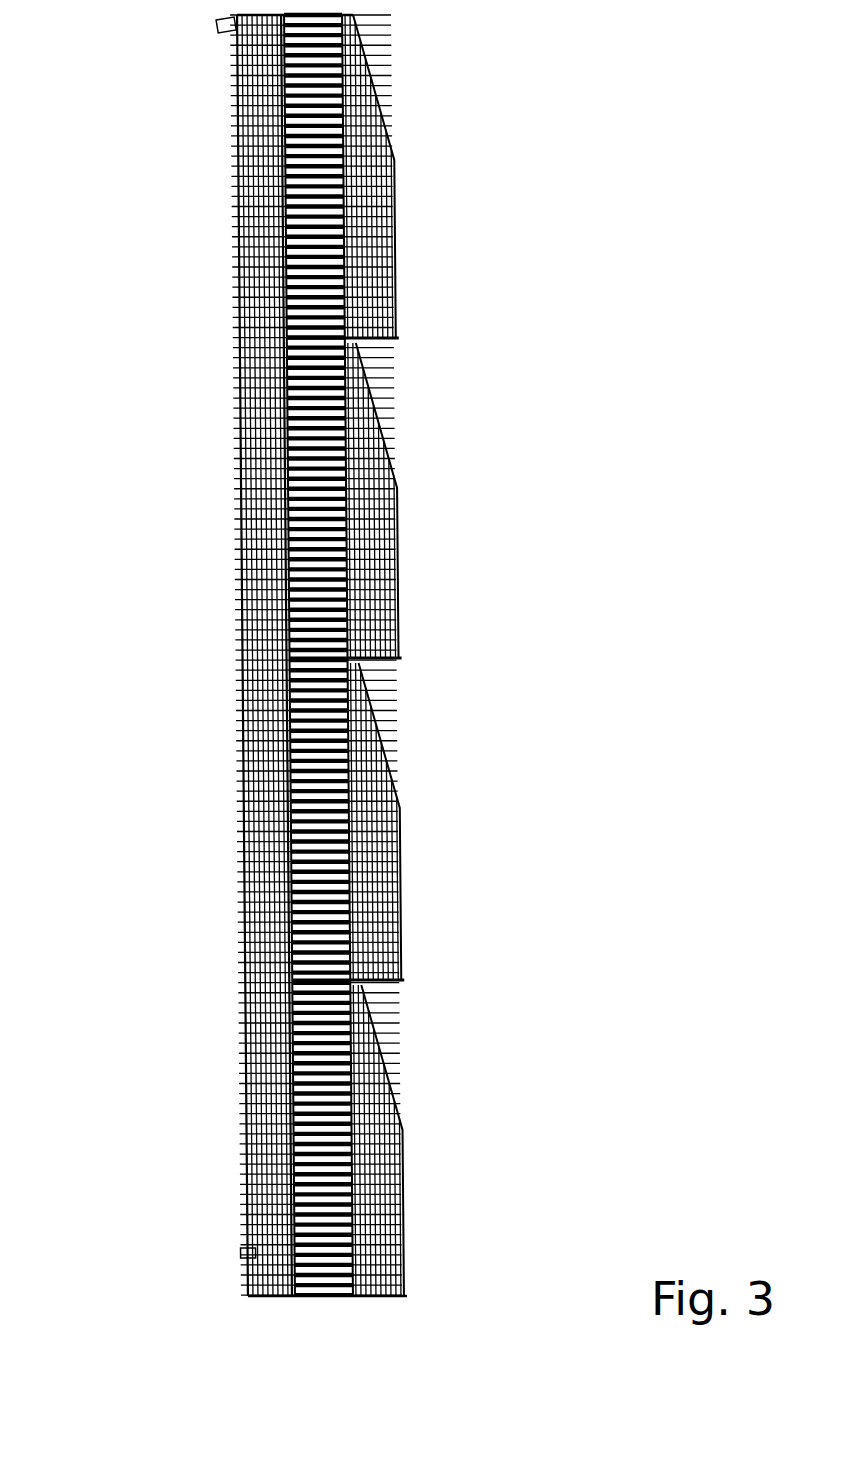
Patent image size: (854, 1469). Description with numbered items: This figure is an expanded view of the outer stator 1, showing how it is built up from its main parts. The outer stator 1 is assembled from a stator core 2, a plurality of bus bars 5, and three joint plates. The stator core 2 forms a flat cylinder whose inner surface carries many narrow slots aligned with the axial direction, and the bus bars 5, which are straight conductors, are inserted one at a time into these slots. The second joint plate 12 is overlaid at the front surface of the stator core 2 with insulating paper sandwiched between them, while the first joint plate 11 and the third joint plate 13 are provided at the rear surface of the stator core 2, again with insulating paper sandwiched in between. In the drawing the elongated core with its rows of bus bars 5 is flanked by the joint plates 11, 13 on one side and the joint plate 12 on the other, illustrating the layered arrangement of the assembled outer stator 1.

The outer stator 1 is at (289, 689).
The stator core 2 is at (316, 1290).
The bus bars 5 is at (373, 332).
The first joint plate 11 is at (440, 655).
The third joint plate 13 is at (385, 235).
The second joint plate 12 is at (222, 430).